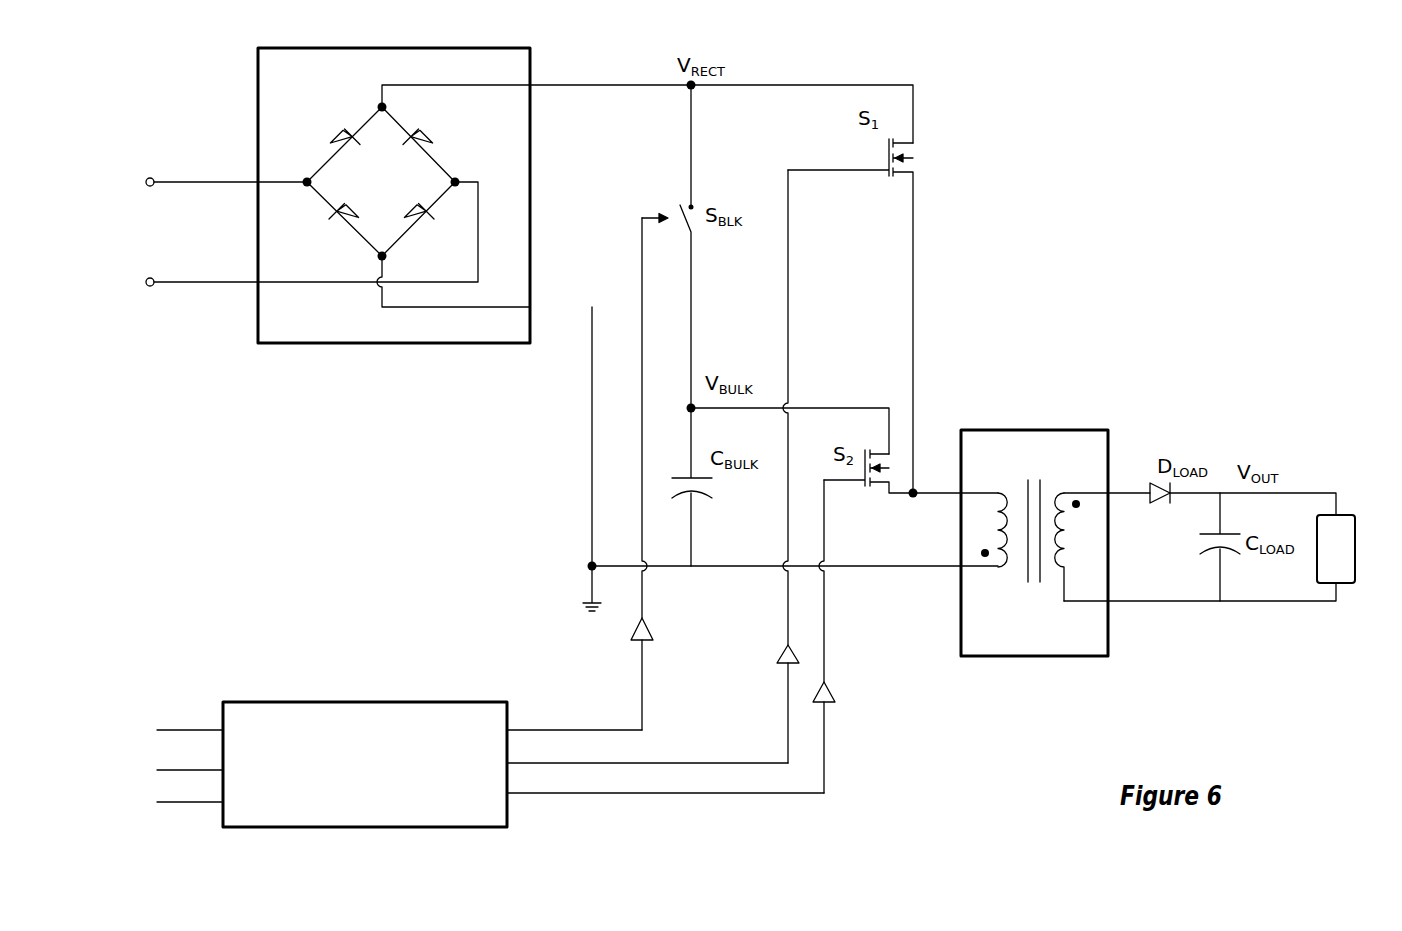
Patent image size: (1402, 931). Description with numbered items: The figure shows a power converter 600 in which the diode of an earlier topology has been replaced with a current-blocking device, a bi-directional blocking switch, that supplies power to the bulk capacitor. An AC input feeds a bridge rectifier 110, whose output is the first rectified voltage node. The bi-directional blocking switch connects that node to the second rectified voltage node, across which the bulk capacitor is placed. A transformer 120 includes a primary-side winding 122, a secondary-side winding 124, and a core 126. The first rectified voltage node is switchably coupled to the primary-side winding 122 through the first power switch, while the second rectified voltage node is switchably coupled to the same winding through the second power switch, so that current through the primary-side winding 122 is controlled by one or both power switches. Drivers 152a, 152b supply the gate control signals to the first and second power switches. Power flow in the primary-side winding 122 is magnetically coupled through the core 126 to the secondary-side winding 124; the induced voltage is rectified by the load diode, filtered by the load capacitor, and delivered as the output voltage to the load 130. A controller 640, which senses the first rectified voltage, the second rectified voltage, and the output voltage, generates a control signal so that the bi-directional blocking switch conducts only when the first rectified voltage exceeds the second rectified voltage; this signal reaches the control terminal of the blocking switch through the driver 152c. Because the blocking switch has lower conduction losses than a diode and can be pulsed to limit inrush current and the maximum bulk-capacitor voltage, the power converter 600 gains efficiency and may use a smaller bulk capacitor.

The bridge rectifier 110 is at (331, 178).
The transformer 120 is at (1034, 525).
The primary-side winding 122 is at (993, 515).
The secondary-side winding 124 is at (1074, 532).
The core 126 is at (1034, 549).
The load 130 is at (1349, 533).
The driver 152a is at (766, 466).
The driver 152b is at (850, 636).
The driver 152c is at (666, 474).
The power converter 600 is at (1218, 55).
The controller 640 is at (464, 747).